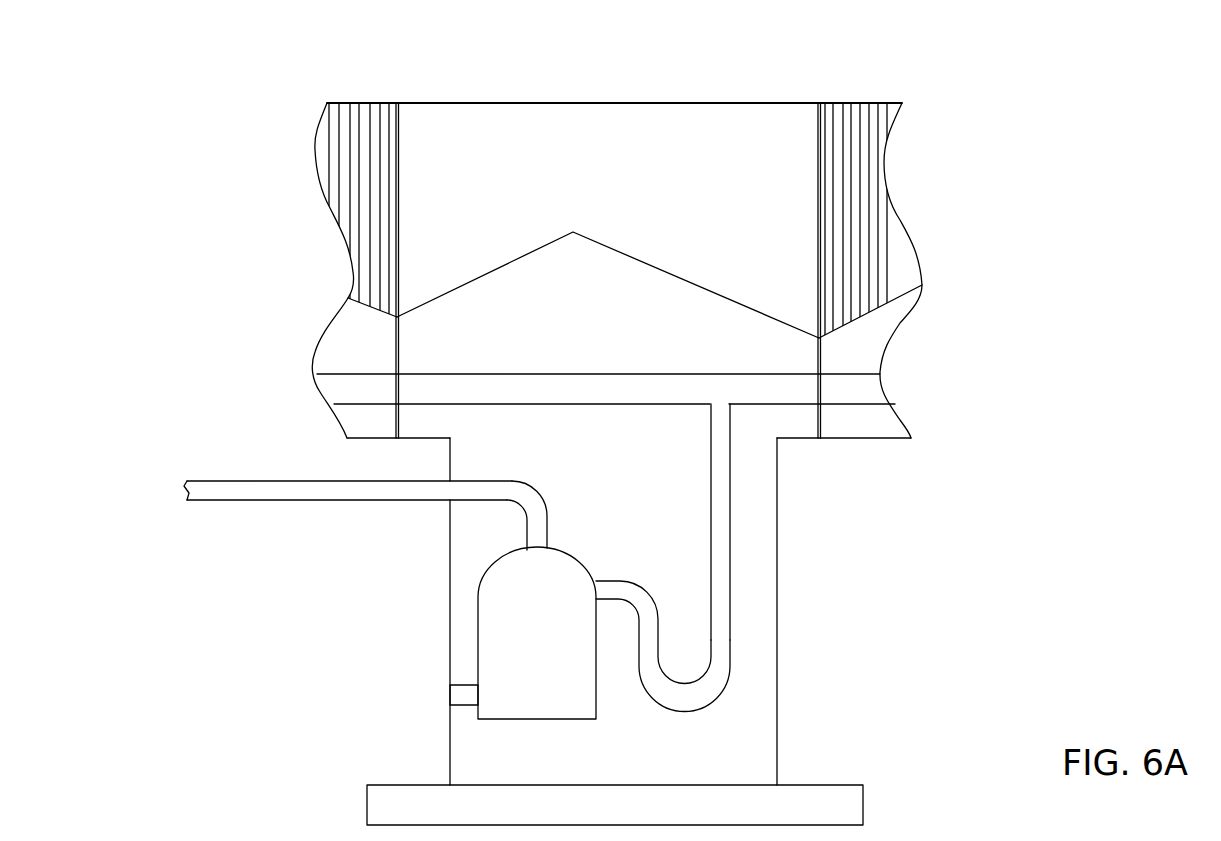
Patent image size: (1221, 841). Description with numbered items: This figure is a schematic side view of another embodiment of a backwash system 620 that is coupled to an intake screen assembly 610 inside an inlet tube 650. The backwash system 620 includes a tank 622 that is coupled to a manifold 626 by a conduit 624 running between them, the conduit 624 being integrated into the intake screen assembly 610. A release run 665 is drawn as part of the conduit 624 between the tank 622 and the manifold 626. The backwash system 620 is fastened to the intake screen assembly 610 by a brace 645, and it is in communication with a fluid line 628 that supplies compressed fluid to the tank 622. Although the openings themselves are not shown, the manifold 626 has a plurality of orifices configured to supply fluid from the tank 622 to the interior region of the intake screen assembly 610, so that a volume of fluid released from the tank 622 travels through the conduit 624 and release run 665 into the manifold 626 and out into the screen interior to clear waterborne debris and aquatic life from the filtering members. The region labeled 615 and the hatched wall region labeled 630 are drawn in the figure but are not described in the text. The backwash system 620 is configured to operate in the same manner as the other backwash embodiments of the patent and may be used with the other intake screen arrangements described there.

The intake screen assembly 610 is at (672, 260).
The internal cavity 615 is at (591, 321).
The backwash system 620 is at (605, 589).
The tank 622 is at (519, 650).
The conduit 624 is at (732, 584).
The manifold 626 is at (802, 387).
The fluid line 628 is at (224, 481).
The casing wall section 630 is at (872, 103).
The brace 645 is at (468, 690).
The inlet tube 650 is at (760, 757).
The release run 665 is at (680, 712).